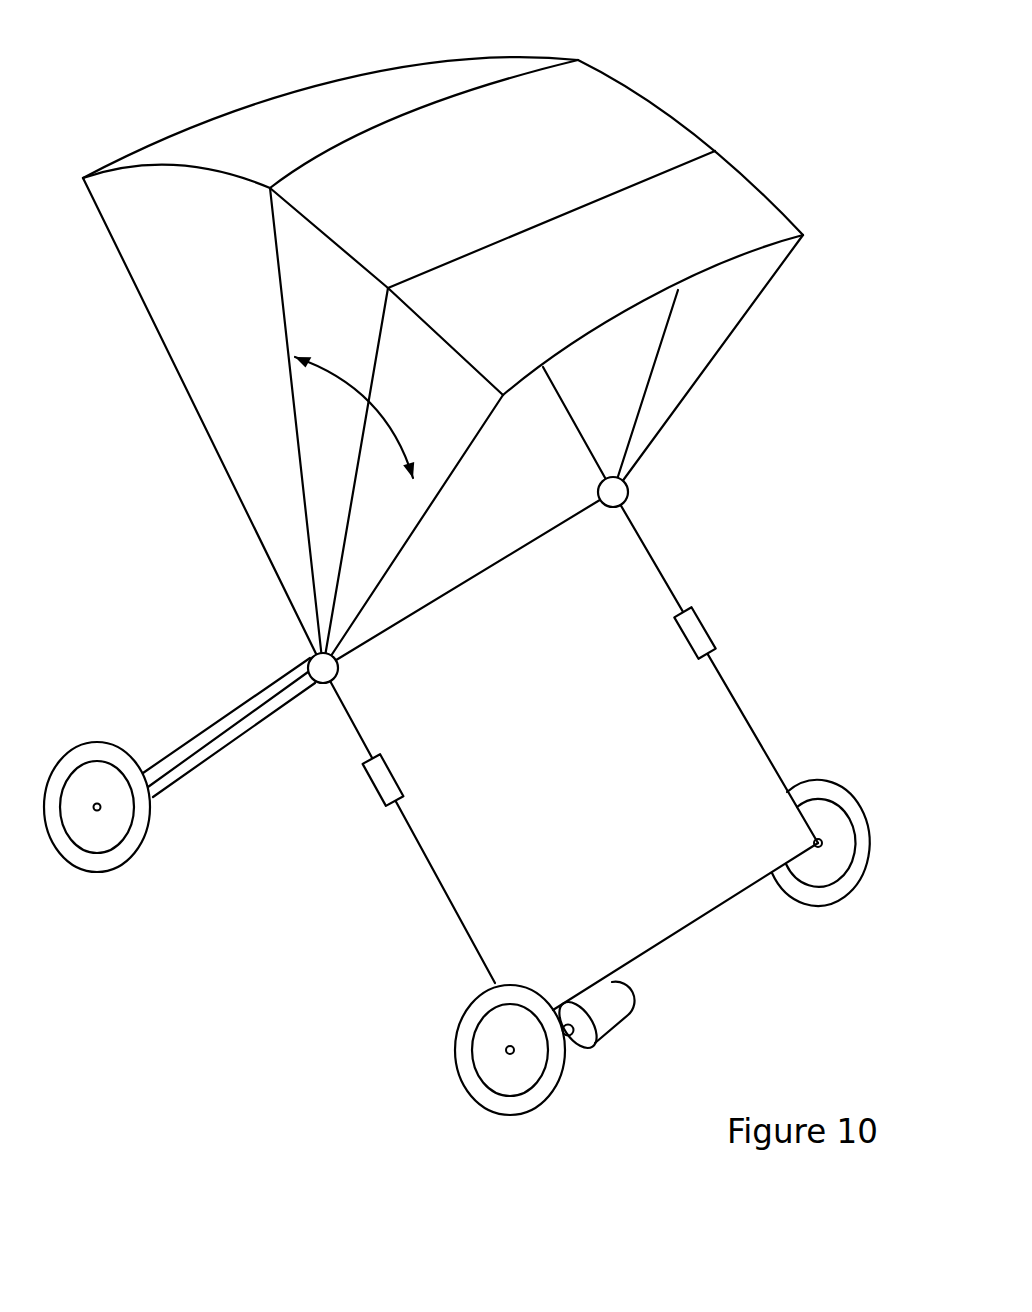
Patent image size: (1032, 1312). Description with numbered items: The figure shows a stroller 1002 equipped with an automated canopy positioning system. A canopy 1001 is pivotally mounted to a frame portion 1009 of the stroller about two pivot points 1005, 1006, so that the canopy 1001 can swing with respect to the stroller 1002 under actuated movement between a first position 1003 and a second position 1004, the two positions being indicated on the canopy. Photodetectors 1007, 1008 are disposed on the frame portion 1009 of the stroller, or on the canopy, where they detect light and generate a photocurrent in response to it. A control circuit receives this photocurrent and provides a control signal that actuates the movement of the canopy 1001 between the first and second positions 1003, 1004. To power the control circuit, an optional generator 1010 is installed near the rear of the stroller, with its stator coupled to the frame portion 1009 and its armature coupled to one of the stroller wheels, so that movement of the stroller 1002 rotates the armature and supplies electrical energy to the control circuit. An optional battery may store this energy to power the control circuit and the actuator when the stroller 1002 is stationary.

The canopy 1001 is at (695, 158).
The stroller 1002 is at (465, 937).
The first position 1003 is at (556, 66).
The second position 1004 is at (803, 237).
The pivot point 1005 is at (316, 684).
The pivot point 1006 is at (628, 490).
The photodetector 1007 is at (375, 800).
The photodetector 1008 is at (713, 632).
The frame portion 1009 is at (360, 733).
The generator 1010 is at (630, 1010).